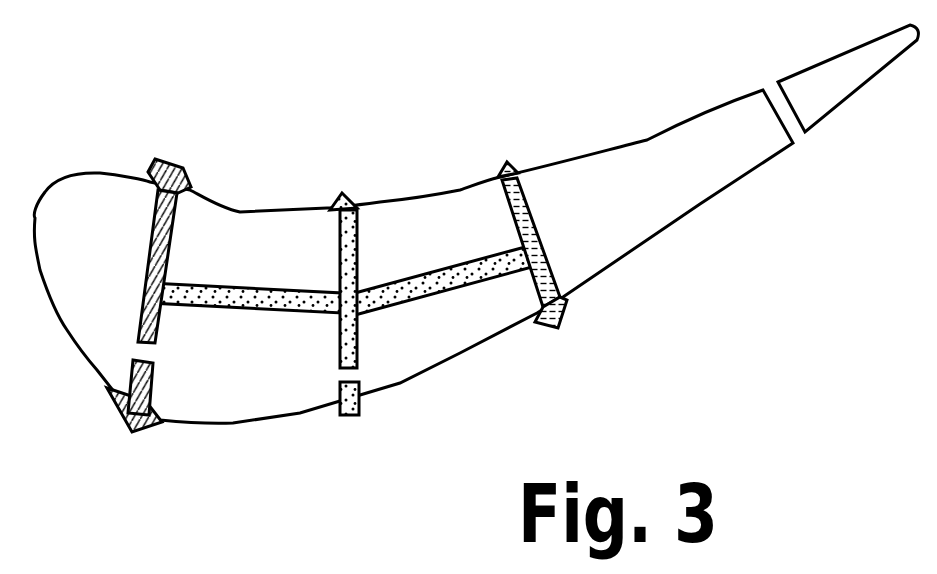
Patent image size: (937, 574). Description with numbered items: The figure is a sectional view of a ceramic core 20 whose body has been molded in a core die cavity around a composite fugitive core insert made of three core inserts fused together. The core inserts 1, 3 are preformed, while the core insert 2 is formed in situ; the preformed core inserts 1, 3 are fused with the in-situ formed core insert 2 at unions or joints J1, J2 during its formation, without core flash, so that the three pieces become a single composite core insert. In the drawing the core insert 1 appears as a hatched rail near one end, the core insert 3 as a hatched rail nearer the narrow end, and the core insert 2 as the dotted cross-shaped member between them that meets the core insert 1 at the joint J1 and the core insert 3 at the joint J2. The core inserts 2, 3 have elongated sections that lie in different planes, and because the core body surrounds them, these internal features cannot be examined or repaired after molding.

The ceramic core 20 is at (462, 87).
The core insert 1 is at (175, 177).
The core insert 2 is at (404, 307).
The core insert 3 is at (563, 317).
The union or joint J1 is at (163, 303).
The union or joint J2 is at (527, 267).